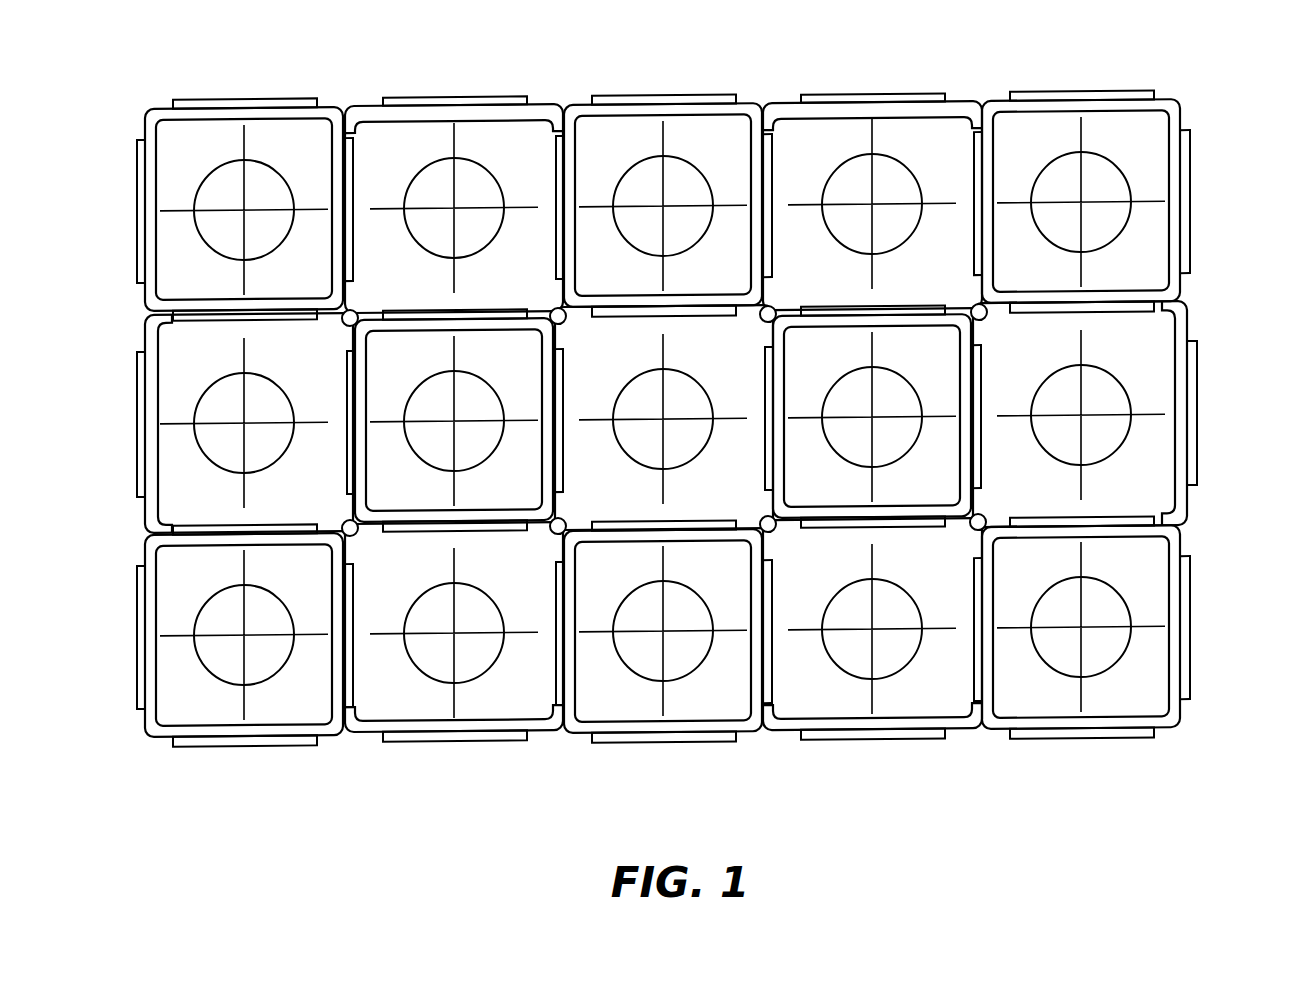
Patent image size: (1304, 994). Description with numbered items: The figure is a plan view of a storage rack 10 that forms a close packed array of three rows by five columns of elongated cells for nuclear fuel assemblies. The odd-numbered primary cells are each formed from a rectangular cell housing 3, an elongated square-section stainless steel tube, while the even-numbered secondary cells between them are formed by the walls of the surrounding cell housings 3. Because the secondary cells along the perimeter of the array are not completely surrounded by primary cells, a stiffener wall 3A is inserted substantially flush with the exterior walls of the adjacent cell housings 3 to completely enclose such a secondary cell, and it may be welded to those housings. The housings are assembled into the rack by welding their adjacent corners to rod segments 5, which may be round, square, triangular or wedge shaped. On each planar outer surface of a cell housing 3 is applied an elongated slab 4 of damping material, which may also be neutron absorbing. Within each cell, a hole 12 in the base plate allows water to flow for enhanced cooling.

The storage rack 10 is at (1300, 97).
The cell housing 3 is at (270, 117).
The stiffener wall 3A is at (427, 112).
The elongated slab 4 is at (142, 256).
The rod segment 5 is at (356, 311).
The hole 12 is at (200, 193).